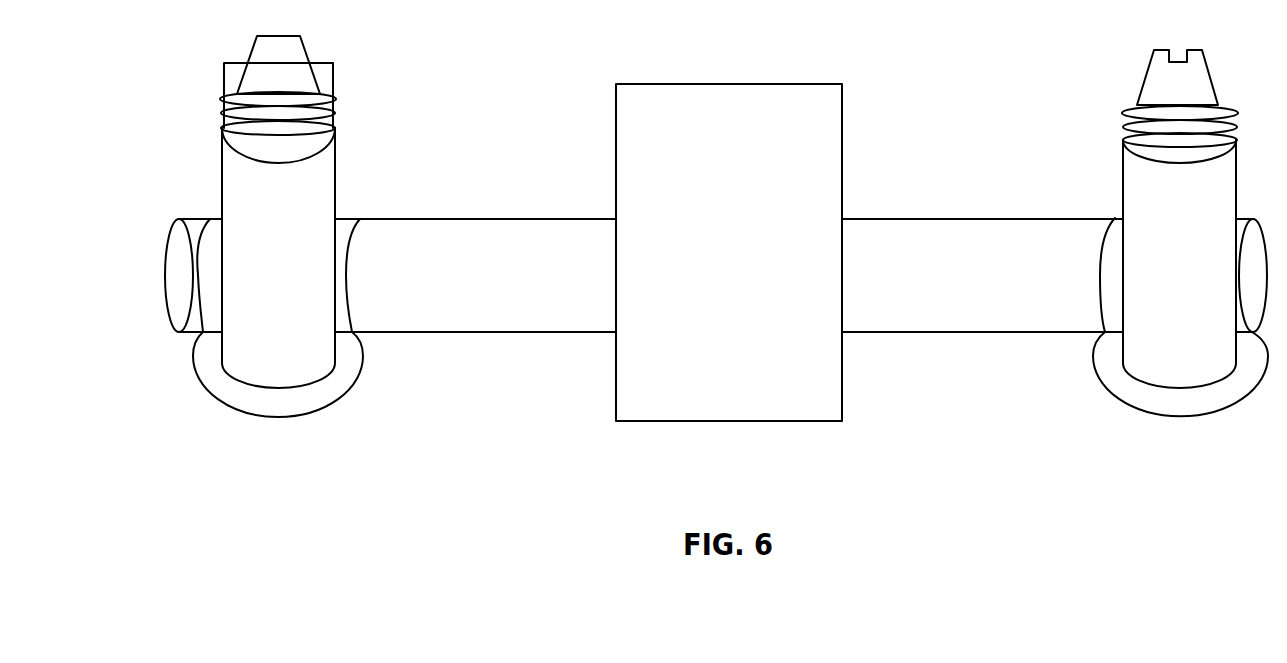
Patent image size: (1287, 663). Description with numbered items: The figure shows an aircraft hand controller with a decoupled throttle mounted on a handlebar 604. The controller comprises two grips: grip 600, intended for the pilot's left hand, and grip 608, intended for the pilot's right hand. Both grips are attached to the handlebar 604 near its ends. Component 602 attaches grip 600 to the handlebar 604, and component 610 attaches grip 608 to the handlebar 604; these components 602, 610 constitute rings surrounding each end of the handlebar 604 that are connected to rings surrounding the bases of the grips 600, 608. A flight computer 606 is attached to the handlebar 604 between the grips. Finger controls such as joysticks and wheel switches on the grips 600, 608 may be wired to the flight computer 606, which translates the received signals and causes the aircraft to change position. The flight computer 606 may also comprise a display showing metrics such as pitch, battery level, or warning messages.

The grip 600 is at (225, 172).
The component 602 is at (280, 418).
The handlebar 604 is at (455, 333).
The flight computer 606 is at (615, 142).
The grip 608 is at (1122, 175).
The component 610 is at (1178, 417).